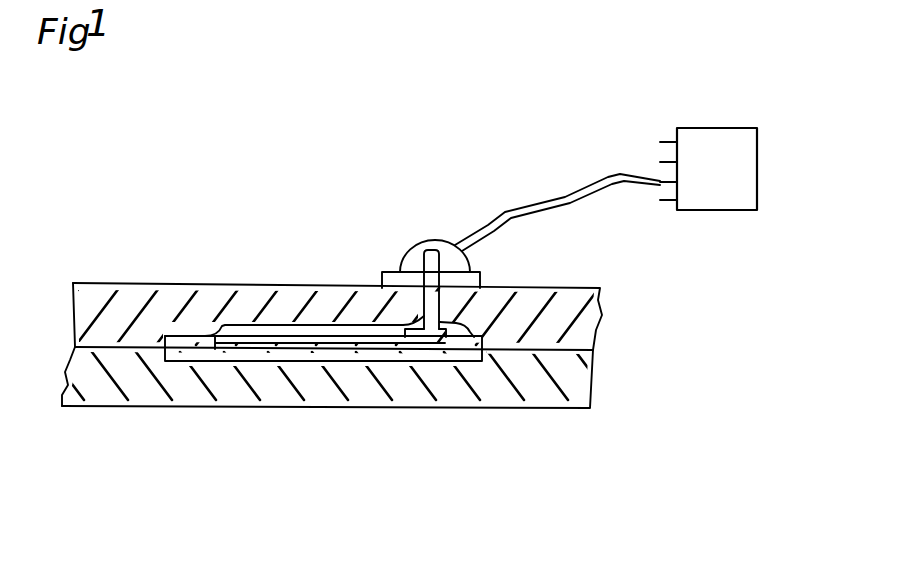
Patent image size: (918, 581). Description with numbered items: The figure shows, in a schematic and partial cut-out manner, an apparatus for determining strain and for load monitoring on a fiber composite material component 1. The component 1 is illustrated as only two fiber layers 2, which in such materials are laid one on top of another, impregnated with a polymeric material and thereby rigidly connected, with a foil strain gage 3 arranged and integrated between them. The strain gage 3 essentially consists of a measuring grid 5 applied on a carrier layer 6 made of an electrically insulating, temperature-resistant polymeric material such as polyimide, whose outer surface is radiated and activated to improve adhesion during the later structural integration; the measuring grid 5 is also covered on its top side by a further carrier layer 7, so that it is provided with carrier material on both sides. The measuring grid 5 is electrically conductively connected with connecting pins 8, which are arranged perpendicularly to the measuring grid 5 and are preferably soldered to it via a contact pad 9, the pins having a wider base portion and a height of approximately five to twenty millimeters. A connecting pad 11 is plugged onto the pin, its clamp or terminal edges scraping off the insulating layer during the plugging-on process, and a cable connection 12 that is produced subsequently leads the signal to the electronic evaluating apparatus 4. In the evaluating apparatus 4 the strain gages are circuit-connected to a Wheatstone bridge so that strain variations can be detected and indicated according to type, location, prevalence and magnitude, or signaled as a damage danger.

The fiber composite material component 1 is at (63, 405).
The fiber layers 2 is at (187, 388).
The foil strain gage 3 is at (278, 342).
The evaluating apparatus 4 is at (715, 185).
The measuring grid 5 is at (236, 340).
The carrier layer 6 is at (372, 352).
The carrier layer 7 is at (194, 338).
The connecting pins 8 is at (430, 260).
The contact pad 9 is at (447, 343).
The connecting pad 11 is at (453, 253).
The cable connection 12 is at (563, 195).